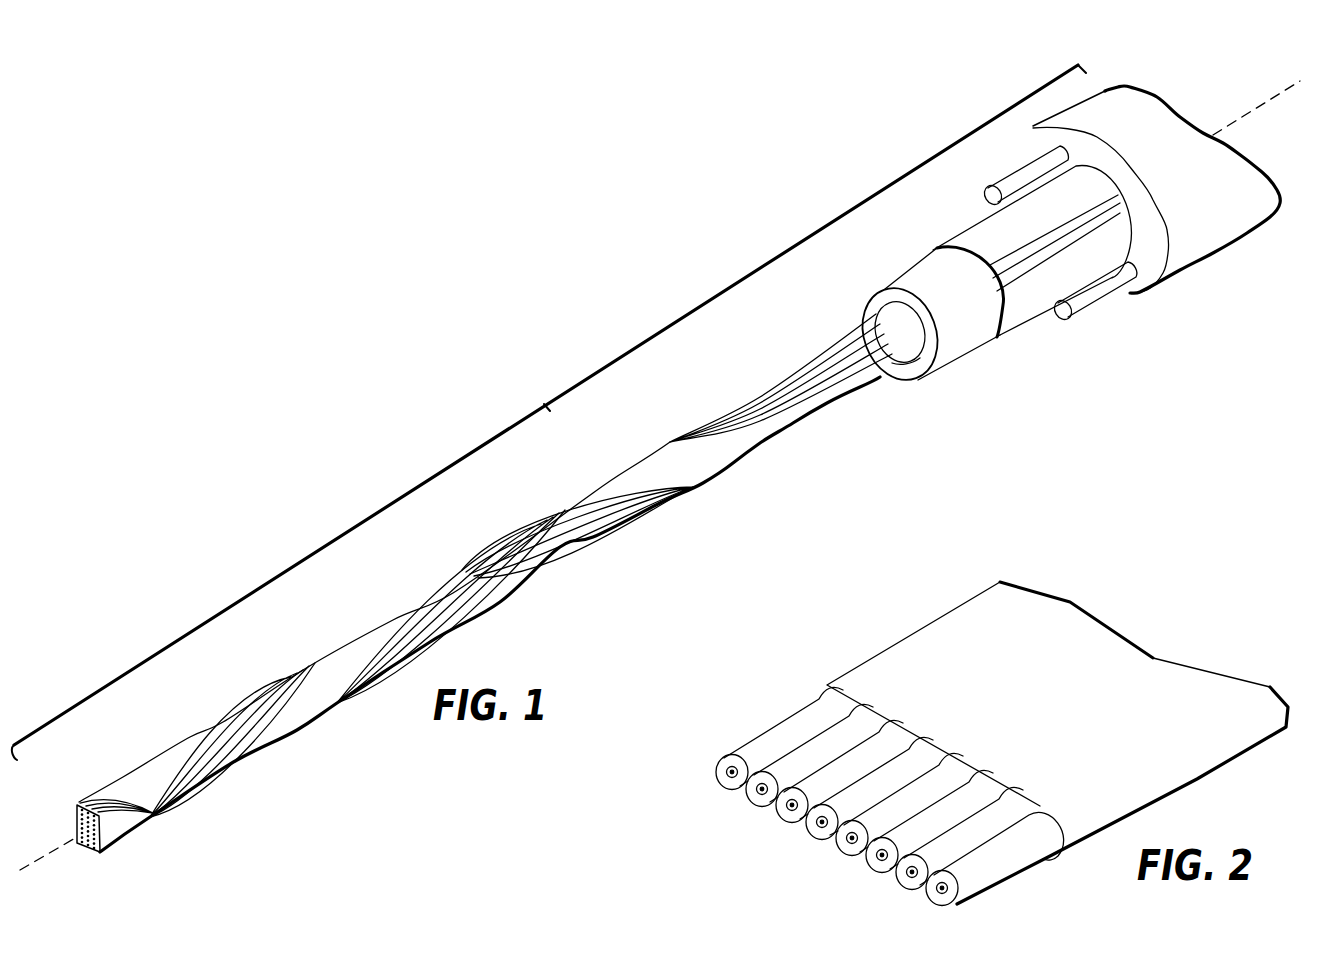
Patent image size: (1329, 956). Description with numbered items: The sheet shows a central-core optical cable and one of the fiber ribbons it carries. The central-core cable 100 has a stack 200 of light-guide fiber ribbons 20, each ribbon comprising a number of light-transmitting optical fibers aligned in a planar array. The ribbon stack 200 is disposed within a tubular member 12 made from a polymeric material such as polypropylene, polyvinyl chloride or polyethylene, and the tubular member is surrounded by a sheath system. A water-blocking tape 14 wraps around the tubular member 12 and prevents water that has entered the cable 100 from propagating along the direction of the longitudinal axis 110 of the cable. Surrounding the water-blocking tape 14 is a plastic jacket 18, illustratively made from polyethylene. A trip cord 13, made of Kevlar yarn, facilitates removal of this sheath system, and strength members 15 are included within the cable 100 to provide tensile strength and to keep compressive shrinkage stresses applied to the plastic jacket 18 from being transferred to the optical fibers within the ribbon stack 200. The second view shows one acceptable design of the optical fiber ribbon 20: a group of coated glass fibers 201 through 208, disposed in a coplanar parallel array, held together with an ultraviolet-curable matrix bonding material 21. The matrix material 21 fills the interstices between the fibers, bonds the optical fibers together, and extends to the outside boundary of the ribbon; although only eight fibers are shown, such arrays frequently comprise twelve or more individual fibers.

In FIG. 1, the tubular member 12 is at (866, 309).
In FIG. 1, the trip cord 13 is at (896, 261).
In FIG. 1, the water-blocking tape 14 is at (985, 223).
In FIG. 1, the strength members 15 is at (1085, 300).
In FIG. 1, the plastic jacket 18 is at (1036, 144).
In FIG. 1, the light-guide fiber ribbon 20 is at (83, 800).
In FIG. 2, the light-guide fiber ribbon 20 is at (988, 748).
In FIG. 2, the matrix bonding material 21 is at (1203, 690).
In FIG. 1, the central-core cable 100 is at (549, 412).
In FIG. 1, the longitudinal axis 110 is at (1292, 140).
In FIG. 1, the ribbon stack 200 is at (596, 479).
In FIG. 2, the coated glass fiber 201 is at (718, 782).
In FIG. 2, the coated glass fiber 208 is at (930, 893).